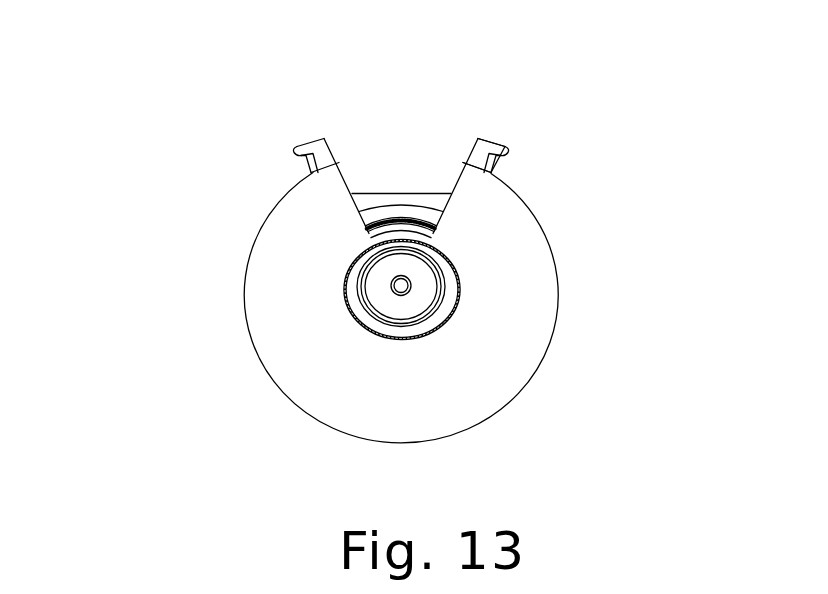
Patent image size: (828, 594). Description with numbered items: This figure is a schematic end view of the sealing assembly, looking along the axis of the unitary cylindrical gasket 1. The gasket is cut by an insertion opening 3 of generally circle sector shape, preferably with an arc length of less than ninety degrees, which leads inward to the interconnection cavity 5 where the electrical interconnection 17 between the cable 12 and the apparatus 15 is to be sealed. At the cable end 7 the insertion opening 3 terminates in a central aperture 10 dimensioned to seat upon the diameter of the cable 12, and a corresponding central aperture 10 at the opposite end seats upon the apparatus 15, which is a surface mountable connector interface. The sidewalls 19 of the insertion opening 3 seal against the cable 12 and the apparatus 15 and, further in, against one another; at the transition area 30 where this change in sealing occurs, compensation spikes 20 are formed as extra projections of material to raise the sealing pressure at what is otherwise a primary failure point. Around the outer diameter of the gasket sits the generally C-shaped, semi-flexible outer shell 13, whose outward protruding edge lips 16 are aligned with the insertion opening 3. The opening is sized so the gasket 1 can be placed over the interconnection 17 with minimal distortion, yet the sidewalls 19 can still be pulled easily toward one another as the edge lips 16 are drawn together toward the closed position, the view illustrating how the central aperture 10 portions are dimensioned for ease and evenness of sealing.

The cylindrical gasket 1 is at (275, 272).
The insertion opening 3 is at (398, 180).
The interconnection cavity 5 is at (415, 180).
The cable end 7 is at (405, 305).
The central aperture 10 is at (447, 308).
The cable 12 is at (362, 308).
The outer shell 13 is at (477, 155).
The apparatus 15 is at (363, 193).
The edge lip 16 is at (312, 141).
The electrical interconnection 17 is at (393, 236).
The sidewall 19 is at (338, 175).
The compensation spike 20 is at (445, 256).
The transition area 30 is at (445, 252).